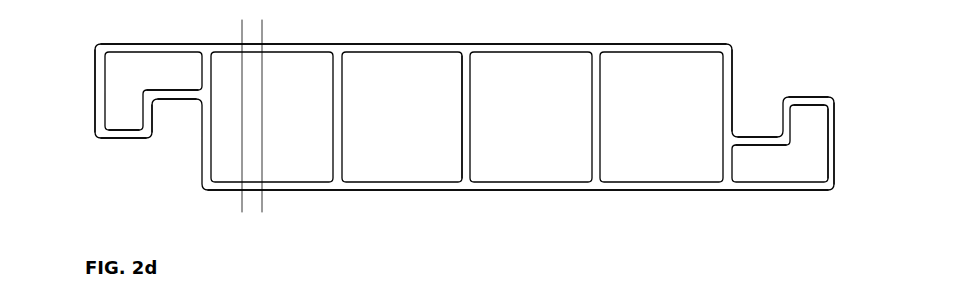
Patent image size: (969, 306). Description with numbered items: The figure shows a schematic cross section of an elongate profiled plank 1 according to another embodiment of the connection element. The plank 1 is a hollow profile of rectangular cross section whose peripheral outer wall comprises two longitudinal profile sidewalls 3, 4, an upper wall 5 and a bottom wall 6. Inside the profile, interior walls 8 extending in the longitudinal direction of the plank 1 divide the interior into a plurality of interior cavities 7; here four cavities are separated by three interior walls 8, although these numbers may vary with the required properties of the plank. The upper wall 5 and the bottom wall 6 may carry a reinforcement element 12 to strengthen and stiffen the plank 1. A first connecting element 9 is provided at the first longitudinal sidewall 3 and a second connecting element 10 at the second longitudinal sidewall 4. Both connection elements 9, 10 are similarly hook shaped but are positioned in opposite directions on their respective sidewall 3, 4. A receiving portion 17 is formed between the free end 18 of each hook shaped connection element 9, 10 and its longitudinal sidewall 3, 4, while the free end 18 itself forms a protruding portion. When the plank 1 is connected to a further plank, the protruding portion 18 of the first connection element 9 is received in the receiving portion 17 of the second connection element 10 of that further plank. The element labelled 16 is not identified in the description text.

The elongate profiled plank 1 is at (703, 210).
The first longitudinal sidewall 3 is at (738, 58).
The second longitudinal sidewall 4 is at (200, 178).
The upper wall 5 is at (412, 41).
The bottom wall 6 is at (434, 193).
The interior cavity 7 is at (407, 133).
The interior wall 8 is at (468, 118).
The first connecting element 9 is at (93, 110).
The second connecting element 10 is at (122, 140).
The reinforcement element 12 is at (174, 122).
The right end wall 16 is at (838, 145).
The receiving portion 17 is at (748, 117).
The free end 18 is at (807, 96).